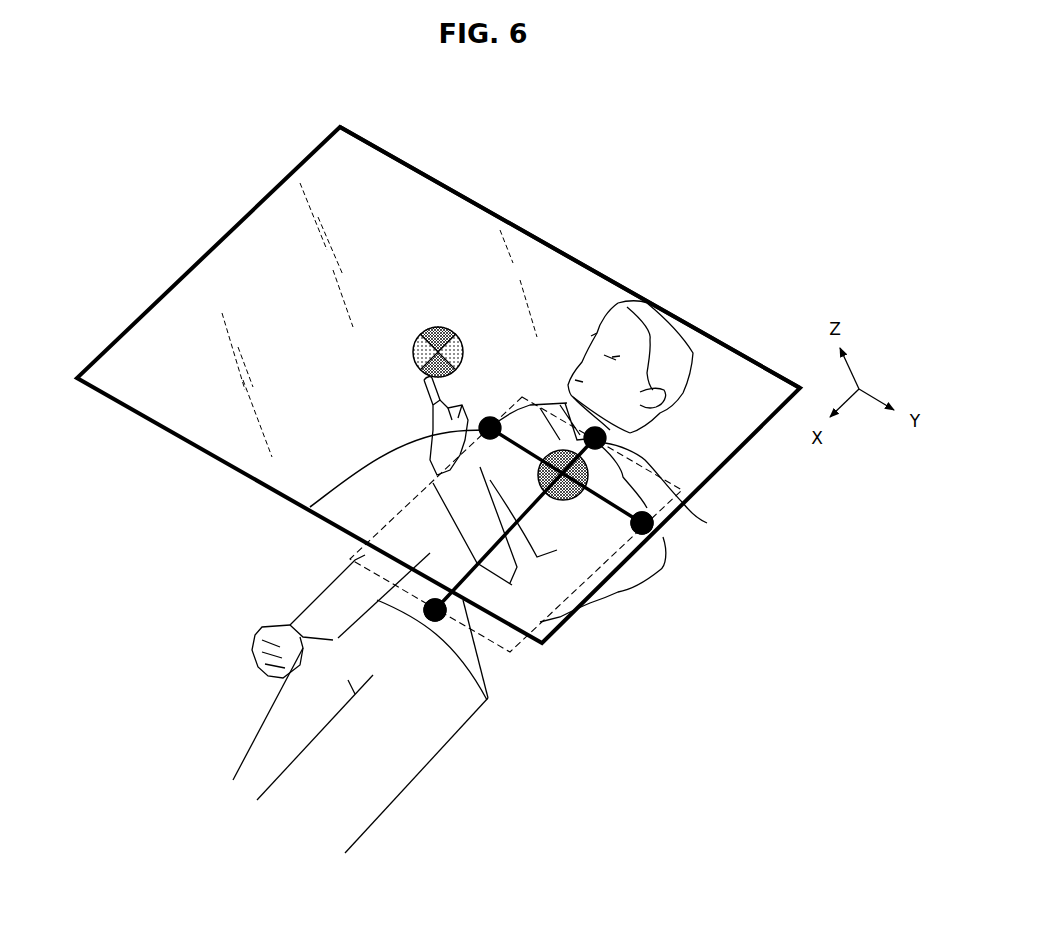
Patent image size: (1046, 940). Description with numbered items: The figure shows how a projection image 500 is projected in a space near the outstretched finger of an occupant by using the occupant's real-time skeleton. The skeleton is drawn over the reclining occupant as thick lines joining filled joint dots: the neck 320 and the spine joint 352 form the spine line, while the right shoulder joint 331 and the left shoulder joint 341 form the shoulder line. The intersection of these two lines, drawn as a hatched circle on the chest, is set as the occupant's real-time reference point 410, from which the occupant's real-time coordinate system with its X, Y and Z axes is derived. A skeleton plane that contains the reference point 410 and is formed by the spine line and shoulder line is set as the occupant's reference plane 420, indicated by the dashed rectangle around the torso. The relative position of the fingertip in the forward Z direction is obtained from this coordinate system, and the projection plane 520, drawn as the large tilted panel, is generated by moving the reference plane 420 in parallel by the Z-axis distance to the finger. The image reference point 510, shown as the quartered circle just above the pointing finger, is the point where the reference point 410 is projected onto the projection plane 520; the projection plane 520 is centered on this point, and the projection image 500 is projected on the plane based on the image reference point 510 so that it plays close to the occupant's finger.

The projection image 500 is at (288, 160).
The image reference point 510 is at (448, 330).
The projection plane 520 is at (572, 258).
The right shoulder joint 331 is at (310, 507).
The neck 320 is at (707, 523).
The occupant's reference plane 420 is at (357, 572).
The left shoulder joint 341 is at (650, 537).
The real-time reference point 410 is at (565, 500).
The spine joint 352 is at (435, 620).